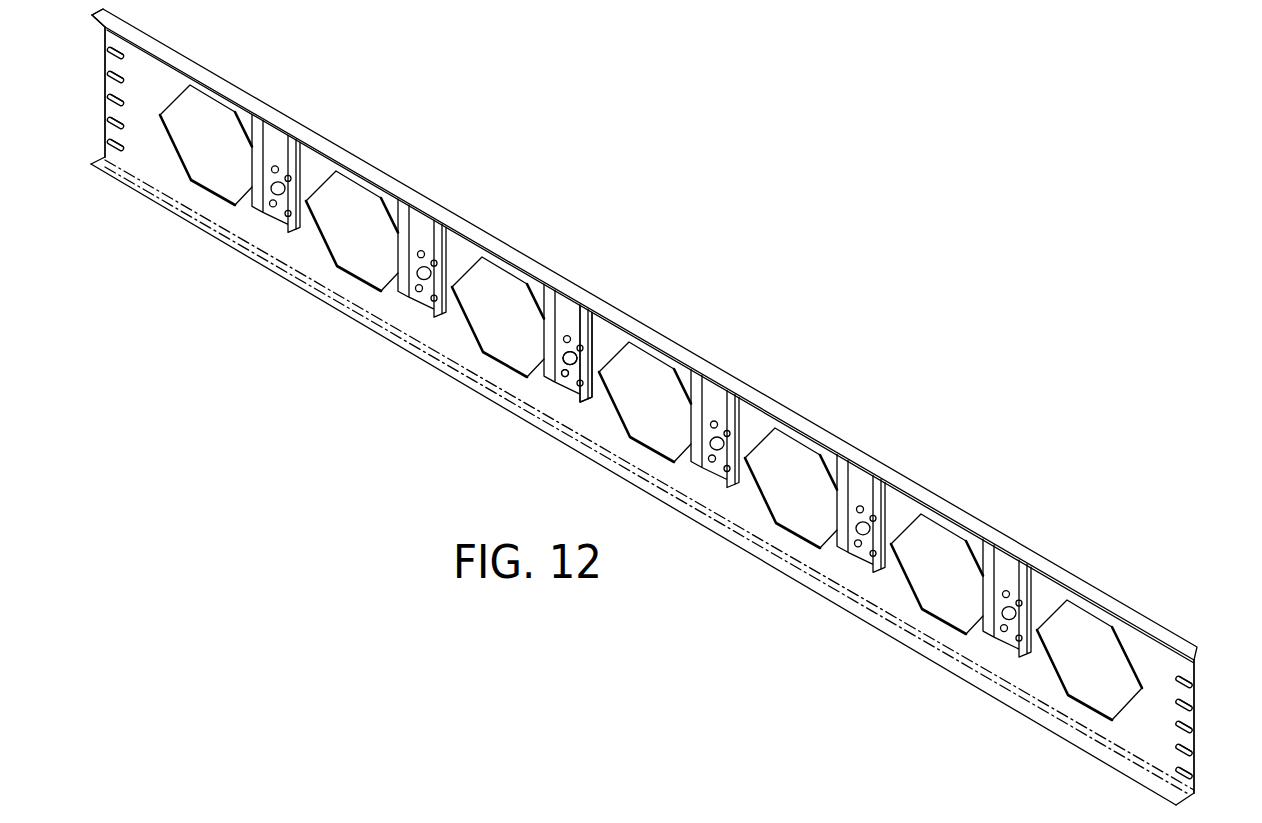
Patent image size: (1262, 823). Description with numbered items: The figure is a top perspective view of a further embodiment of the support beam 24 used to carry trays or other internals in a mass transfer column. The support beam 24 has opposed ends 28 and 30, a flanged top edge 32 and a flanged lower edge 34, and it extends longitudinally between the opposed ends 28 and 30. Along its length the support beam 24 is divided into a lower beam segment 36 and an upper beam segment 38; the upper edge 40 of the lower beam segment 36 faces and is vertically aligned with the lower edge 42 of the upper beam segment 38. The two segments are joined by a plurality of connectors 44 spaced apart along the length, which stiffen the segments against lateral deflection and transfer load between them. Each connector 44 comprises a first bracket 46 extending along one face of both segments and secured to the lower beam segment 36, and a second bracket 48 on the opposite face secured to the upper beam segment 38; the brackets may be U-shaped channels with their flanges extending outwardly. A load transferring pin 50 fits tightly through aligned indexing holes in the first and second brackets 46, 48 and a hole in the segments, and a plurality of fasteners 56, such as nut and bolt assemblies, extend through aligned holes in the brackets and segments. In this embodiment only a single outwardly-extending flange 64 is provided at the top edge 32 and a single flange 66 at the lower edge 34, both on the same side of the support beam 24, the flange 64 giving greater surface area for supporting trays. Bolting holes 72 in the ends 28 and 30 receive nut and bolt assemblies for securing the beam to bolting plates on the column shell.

The support beam 24 is at (412, 175).
The opposed end 28 is at (107, 67).
The bolting holes 72 is at (112, 127).
The upper beam segment 38 is at (318, 172).
The lower beam segment 36 is at (268, 225).
The second bracket 48 is at (588, 348).
The first bracket 46 is at (603, 373).
The load transferring pin 50 is at (566, 360).
The fasteners 56 is at (566, 375).
The connectors 44 is at (592, 402).
The outwardly-extending flange 64 is at (780, 419).
The outwardly-extending flange 66 is at (843, 602).
The upper edge 40 is at (1142, 688).
The flanged top edge 32 is at (1195, 655).
The opposed end 30 is at (1192, 670).
The lower edge 42 is at (1187, 725).
The flanged lower edge 34 is at (1195, 792).